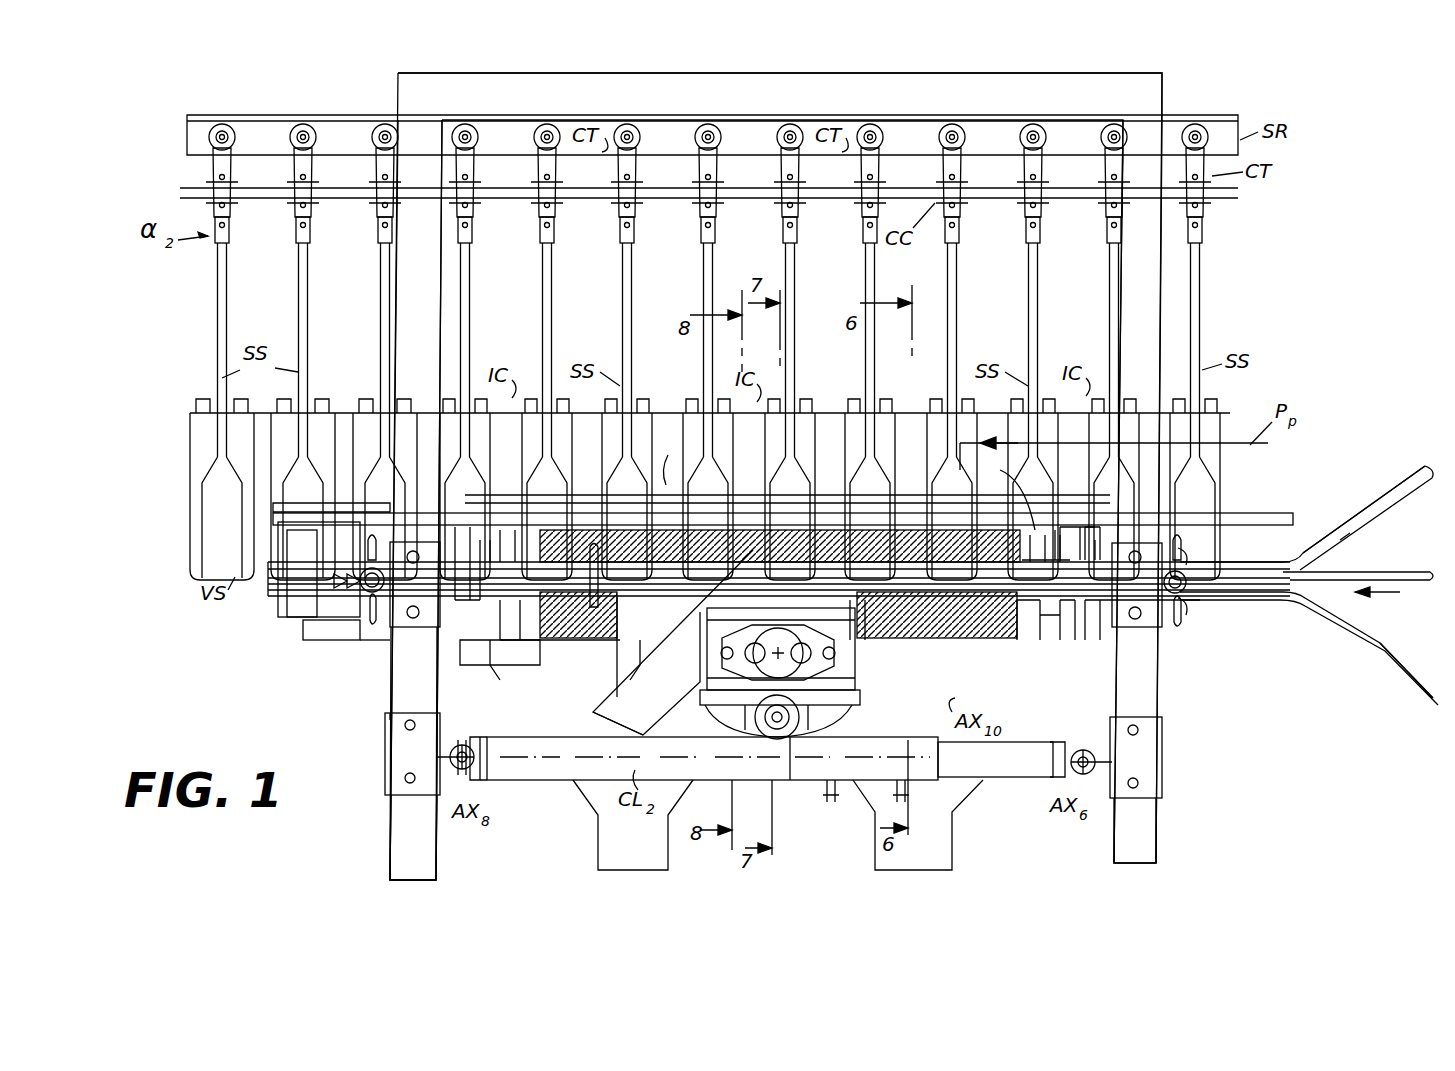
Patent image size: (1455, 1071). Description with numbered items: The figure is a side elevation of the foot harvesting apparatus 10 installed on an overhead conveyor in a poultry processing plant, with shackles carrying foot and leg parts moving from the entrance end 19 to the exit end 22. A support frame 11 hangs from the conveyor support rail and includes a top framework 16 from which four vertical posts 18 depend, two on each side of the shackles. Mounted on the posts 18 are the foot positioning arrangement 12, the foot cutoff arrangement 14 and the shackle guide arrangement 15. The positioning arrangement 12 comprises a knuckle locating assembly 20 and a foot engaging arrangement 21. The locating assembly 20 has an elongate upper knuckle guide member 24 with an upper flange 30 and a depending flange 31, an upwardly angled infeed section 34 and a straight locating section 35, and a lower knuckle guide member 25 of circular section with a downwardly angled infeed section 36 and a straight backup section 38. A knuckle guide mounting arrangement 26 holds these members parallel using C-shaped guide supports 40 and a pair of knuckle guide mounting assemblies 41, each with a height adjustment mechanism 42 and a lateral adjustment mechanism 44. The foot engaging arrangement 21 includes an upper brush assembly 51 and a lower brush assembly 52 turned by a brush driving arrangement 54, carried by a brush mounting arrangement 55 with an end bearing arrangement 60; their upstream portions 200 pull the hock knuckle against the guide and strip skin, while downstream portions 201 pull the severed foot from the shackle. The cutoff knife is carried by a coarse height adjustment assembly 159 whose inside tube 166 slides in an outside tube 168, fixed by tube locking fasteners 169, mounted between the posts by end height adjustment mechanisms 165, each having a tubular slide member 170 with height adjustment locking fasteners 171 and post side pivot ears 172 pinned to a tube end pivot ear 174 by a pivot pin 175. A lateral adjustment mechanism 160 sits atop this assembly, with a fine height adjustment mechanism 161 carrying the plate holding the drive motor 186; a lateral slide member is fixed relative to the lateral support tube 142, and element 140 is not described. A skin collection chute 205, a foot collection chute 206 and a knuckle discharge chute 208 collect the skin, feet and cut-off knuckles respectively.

The foot harvesting apparatus 10 is at (322, 716).
The support frame 11 is at (1166, 78).
The foot positioning arrangement 12 is at (383, 651).
The foot cutoff arrangement 14 is at (840, 723).
The shackle guide arrangement 15 is at (1280, 492).
The top framework 16 is at (845, 74).
The vertical posts 18 is at (412, 280).
The entrance end 19 is at (1392, 597).
The knuckle locating assembly 20 is at (270, 588).
The foot engaging arrangement 21 is at (575, 645).
The exit end 22 is at (272, 630).
The upper knuckle guide member 24 is at (1292, 552).
The lower knuckle guide member 25 is at (1290, 607).
The knuckle guide mounting arrangement 26 is at (1188, 559).
The upper flange 30 is at (1345, 516).
The depending flange 31 is at (1388, 540).
The upwardly angled infeed section 34 is at (1428, 474).
The straight locating section 35 is at (1100, 540).
The downwardly angled infeed section 36 is at (1385, 658).
The straight backup section 38 is at (1062, 632).
The C-shaped guide supports 40 is at (380, 548).
The knuckle guide mounting assemblies 41 is at (358, 589).
The height adjustment mechanism 42 is at (413, 628).
The lateral adjustment mechanism 44 is at (386, 580).
The upper brush assembly 51 is at (870, 663).
The lower brush assembly 52 is at (1025, 640).
The brush driving arrangement 54 is at (305, 632).
The brush mounting arrangement 55 is at (1108, 648).
The end bearing arrangement 60 is at (1085, 635).
The straight guide section 140 is at (1392, 562).
The lateral support tube 142 is at (1428, 578).
The coarse height adjustment assembly 159 is at (468, 735).
The lateral adjustment mechanism 160 is at (790, 782).
The fine height adjustment mechanism 161 is at (865, 697).
The end height adjustment mechanisms 165 is at (380, 798).
The inside tube 166 is at (990, 775).
The outside tube 168 is at (560, 780).
The tube locking fasteners 169 is at (895, 798).
The tubular slide member 170 is at (385, 757).
The height adjustment locking fasteners 171 is at (405, 727).
The post side pivot ears 172 is at (452, 775).
The tube end pivot ear 174 is at (480, 745).
The pivot pin 175 is at (548, 780).
The drive motor 186 is at (722, 658).
The upstream brush portions 200 is at (873, 480).
The downstream brush portions 201 is at (668, 455).
The skin collection chute 205 is at (955, 814).
The foot collection chute 206 is at (660, 866).
The knuckle discharge chute 208 is at (596, 708).